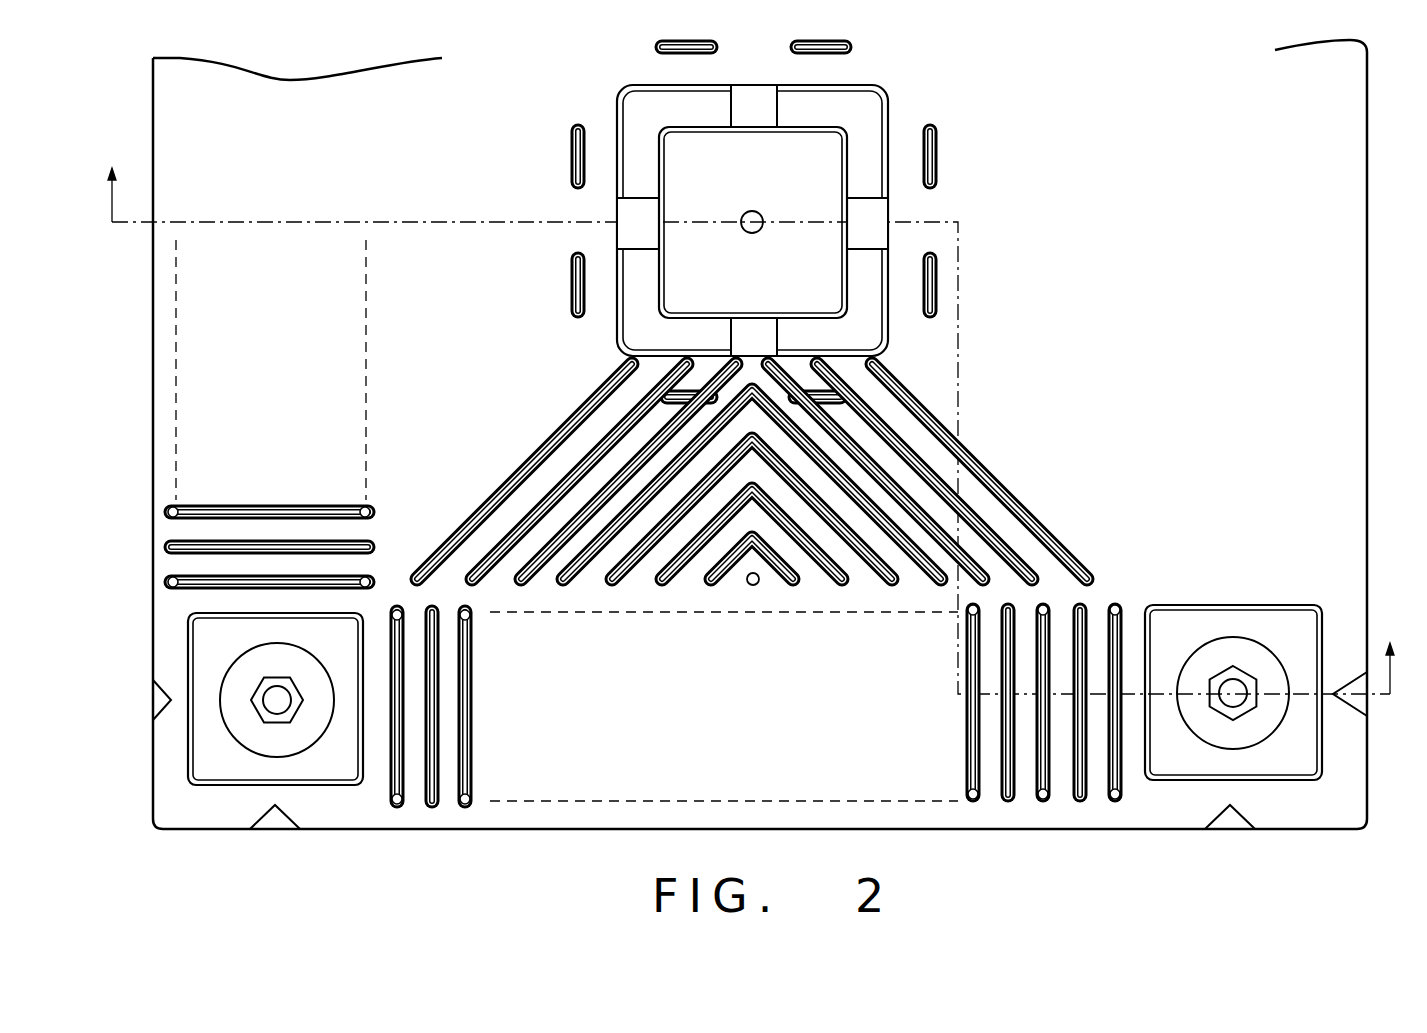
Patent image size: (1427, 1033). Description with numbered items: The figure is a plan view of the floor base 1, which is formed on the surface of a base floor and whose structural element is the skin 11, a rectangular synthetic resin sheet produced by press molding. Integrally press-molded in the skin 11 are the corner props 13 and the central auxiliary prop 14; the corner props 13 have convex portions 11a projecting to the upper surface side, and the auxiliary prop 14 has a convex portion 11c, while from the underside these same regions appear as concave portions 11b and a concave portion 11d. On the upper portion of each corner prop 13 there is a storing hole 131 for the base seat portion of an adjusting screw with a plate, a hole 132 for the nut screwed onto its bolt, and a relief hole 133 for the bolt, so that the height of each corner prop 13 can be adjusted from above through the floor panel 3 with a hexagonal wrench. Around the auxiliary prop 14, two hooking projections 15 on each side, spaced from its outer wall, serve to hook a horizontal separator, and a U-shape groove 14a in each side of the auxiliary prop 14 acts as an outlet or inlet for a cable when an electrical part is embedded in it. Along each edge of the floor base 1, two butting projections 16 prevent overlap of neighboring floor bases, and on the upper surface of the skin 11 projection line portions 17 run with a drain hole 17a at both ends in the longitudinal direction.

The floor base 1 is at (150, 110).
The floor panel 3 is at (756, 415).
The skin 11 is at (160, 619).
The convex portion 11a is at (195, 773).
The concave portion 11b is at (774, 701).
The convex portion 11c is at (884, 342).
The concave portion 11d is at (833, 157).
The corner prop 13 is at (726, 701).
The storing hole 131 is at (1232, 648).
The hole for nut 132 is at (1250, 677).
The relief hole 133 is at (1246, 692).
The auxiliary prop 14 is at (722, 203).
The U-shape groove 14a is at (758, 101).
The hooking projection 15 is at (672, 55).
The butting projection 16 is at (150, 703).
The projection line portion 17 is at (697, 685).
The drain hole 17a is at (408, 803).